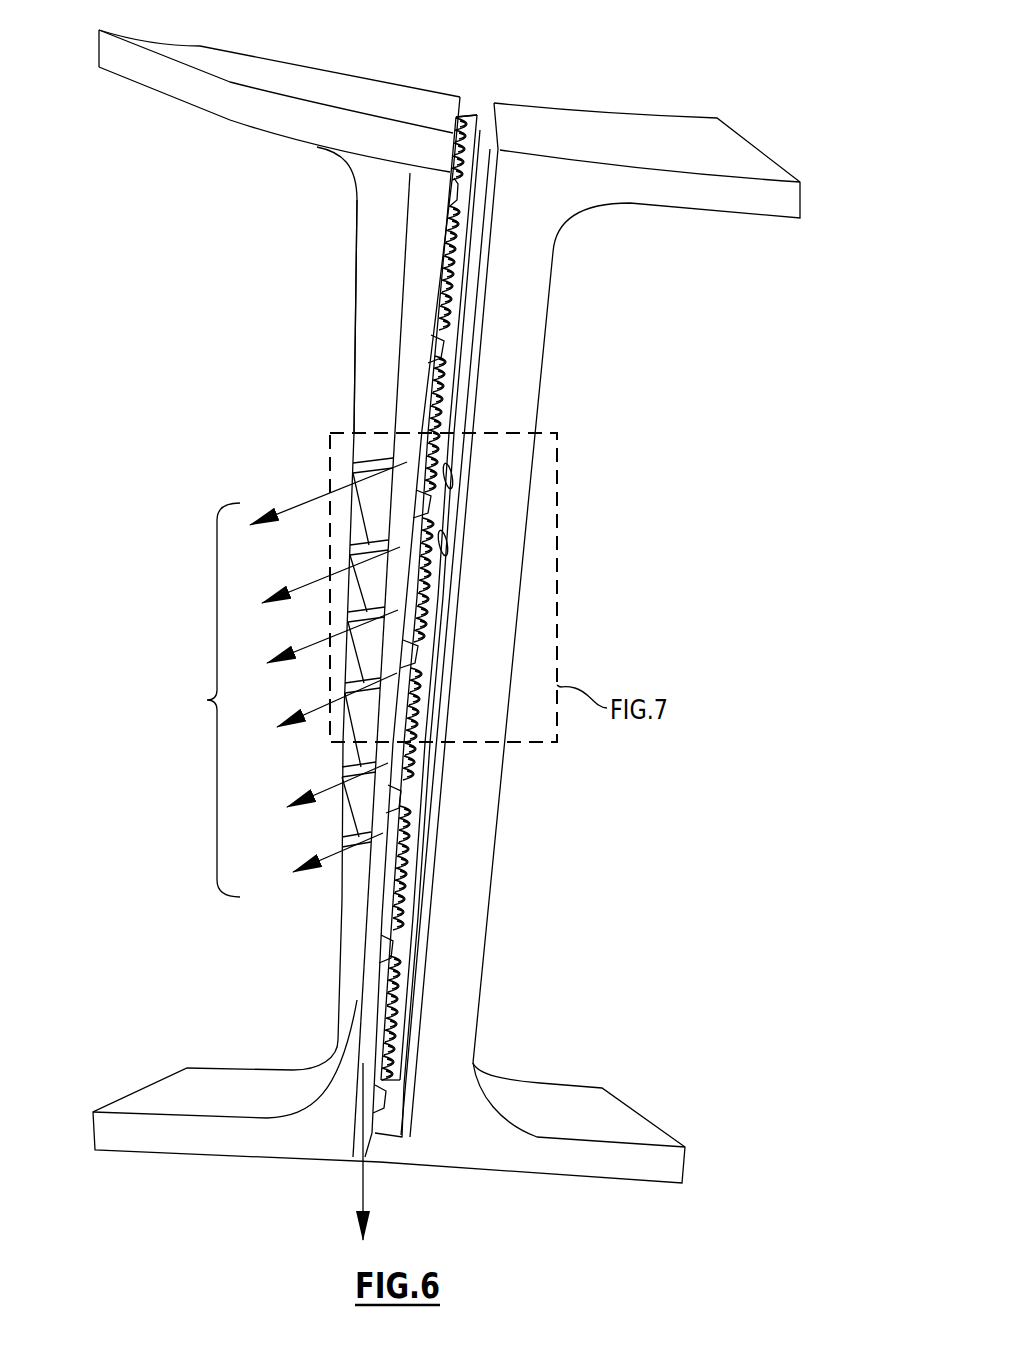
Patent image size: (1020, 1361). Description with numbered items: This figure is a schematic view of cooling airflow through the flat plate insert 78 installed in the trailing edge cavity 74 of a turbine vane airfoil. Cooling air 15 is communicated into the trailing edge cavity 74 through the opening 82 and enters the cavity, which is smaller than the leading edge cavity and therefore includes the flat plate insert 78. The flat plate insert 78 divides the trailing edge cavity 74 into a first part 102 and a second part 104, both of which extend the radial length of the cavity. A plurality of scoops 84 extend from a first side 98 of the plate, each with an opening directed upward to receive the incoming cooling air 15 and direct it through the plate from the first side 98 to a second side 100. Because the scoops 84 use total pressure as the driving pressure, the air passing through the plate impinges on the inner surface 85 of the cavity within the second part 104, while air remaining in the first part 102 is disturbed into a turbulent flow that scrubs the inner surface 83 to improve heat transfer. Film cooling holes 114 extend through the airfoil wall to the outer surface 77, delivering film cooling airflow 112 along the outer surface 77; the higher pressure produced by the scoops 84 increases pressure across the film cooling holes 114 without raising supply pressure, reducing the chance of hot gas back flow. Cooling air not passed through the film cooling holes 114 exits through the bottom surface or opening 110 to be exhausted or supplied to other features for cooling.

The cooling air 15 is at (472, 112).
The trailing edge cavity 74 is at (477, 185).
The outer surface 77 is at (340, 986).
The flat plate insert 78 is at (442, 230).
The opening 82 is at (490, 127).
The inner surface 83 is at (427, 865).
The scoops 84 is at (427, 817).
The inner surface 85 is at (415, 258).
The first side 98 is at (465, 263).
The second side 100 is at (427, 302).
The first part 102 is at (462, 335).
The second part 104 is at (398, 343).
The bottom surface or opening 110 is at (357, 1157).
The film cooling airflow 112 is at (207, 700).
The film cooling holes 114 is at (349, 625).